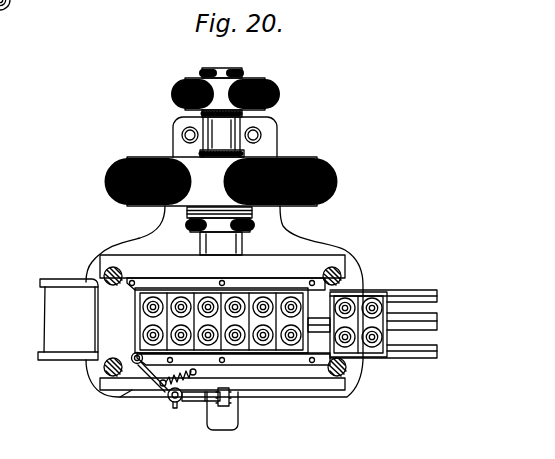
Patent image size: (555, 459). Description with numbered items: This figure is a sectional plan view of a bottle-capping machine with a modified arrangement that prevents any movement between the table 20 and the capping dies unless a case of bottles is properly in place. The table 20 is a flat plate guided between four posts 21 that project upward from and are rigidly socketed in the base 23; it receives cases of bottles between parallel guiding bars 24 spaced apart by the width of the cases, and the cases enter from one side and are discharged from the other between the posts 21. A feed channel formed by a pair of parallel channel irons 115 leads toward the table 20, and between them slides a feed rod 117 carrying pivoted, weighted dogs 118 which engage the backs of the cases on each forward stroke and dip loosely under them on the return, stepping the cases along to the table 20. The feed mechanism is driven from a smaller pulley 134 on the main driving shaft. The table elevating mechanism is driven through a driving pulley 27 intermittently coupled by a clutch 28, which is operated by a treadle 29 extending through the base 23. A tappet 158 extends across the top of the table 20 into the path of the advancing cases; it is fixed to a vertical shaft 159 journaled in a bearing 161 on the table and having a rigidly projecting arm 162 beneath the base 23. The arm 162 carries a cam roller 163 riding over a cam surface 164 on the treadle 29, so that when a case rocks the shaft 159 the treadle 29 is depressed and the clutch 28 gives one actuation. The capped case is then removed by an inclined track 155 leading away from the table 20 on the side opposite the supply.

The table 20 is at (272, 381).
The posts 21 is at (104, 273).
The base 23 is at (345, 240).
The guiding bars 24 is at (272, 284).
The driving pulley 27 is at (317, 165).
The clutch 28 is at (248, 233).
The treadle 29 is at (238, 426).
The channel irons 115 is at (437, 355).
The feed rod 117 is at (430, 320).
The dogs 118 is at (320, 333).
The pulley 134 is at (262, 96).
The inclined track 155 is at (68, 319).
The tappet 158 is at (148, 370).
The vertical shaft 159 is at (170, 400).
The bearing 161 is at (162, 386).
The arm 162 is at (198, 402).
The cam roller 163 is at (225, 392).
The cam surface 164 is at (221, 406).